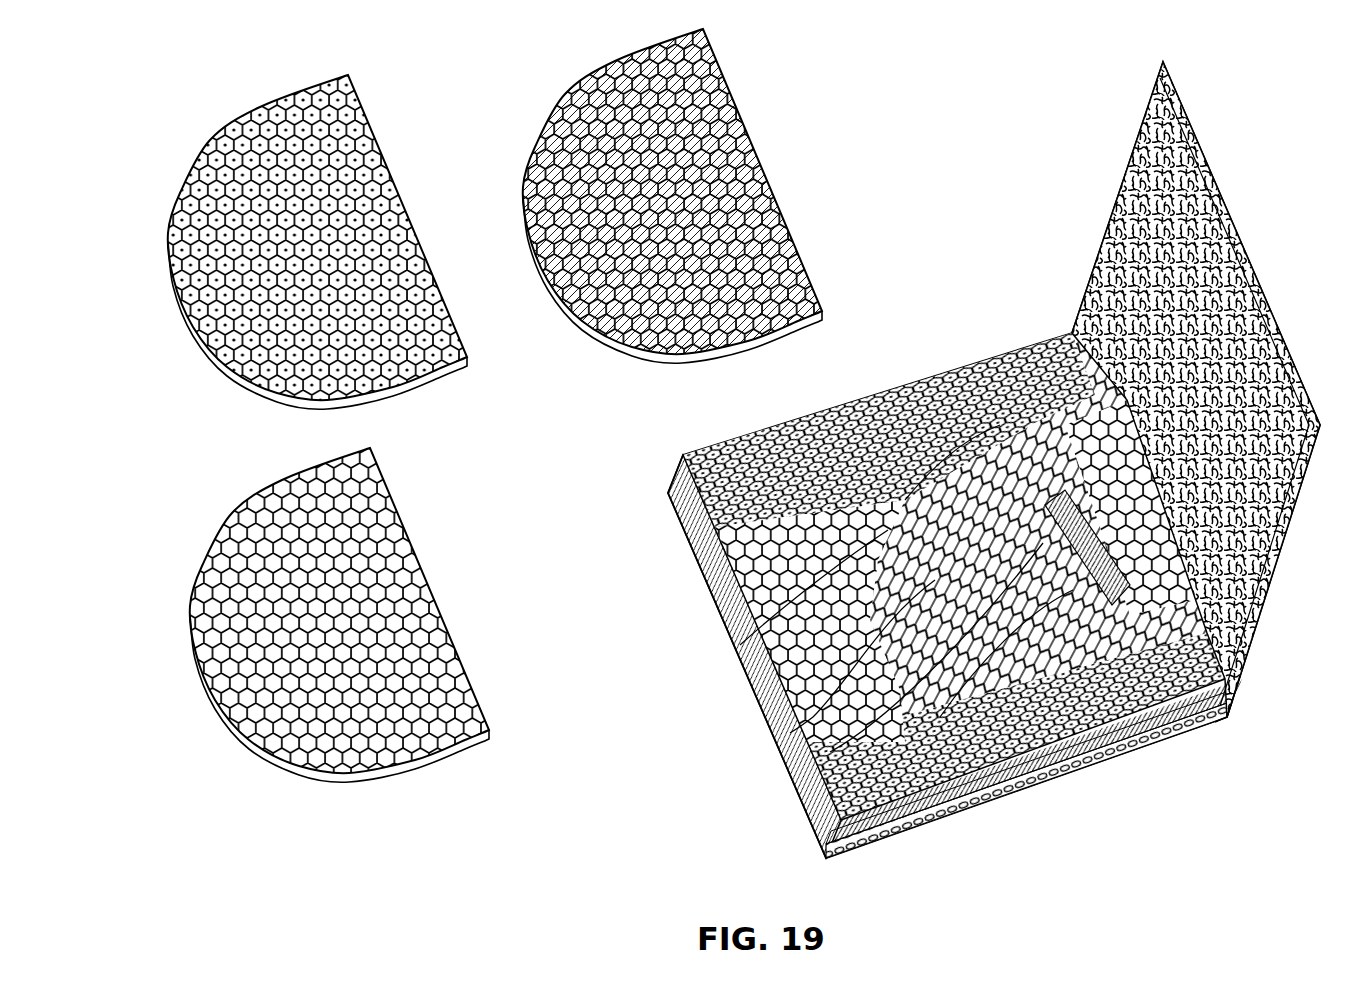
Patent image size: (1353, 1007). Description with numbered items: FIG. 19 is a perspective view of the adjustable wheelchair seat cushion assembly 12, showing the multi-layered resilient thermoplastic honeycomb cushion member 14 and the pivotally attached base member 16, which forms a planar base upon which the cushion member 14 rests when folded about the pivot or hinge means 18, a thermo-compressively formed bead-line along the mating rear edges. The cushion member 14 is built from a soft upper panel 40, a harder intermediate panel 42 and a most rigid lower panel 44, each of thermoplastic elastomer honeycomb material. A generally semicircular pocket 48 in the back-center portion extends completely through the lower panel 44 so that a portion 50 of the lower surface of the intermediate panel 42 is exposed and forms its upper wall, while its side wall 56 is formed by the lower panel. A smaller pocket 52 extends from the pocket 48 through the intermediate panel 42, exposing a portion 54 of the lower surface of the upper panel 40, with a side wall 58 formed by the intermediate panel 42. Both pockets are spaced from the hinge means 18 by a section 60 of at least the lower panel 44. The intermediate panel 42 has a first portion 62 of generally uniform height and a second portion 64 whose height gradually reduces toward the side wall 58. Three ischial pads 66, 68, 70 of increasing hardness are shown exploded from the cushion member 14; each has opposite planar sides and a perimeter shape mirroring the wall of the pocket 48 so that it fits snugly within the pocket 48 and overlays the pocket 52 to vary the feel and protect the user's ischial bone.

The seat cushion assembly 12 is at (1258, 220).
The cushion member 14 is at (1168, 761).
The base member 16 is at (1268, 289).
The pivot or hinge means 18 is at (1225, 728).
The upper panel 40 is at (858, 848).
The intermediate panel 42 is at (915, 833).
The lower panel 44 is at (987, 805).
The pocket 48 is at (893, 500).
The portion of the lower surface of the intermediate panel 50 is at (910, 572).
The pocket 52 is at (1030, 500).
The portion of the lower surface of the upper panel 54 is at (790, 733).
The side wall 56 is at (905, 478).
The side wall 58 is at (830, 752).
The section 60 is at (1090, 433).
The first portion 62 is at (740, 645).
The second portion 64 is at (937, 480).
The first ischial pad 66 is at (617, 60).
The second ischial pad 68 is at (252, 110).
The third ischial pad 70 is at (270, 485).